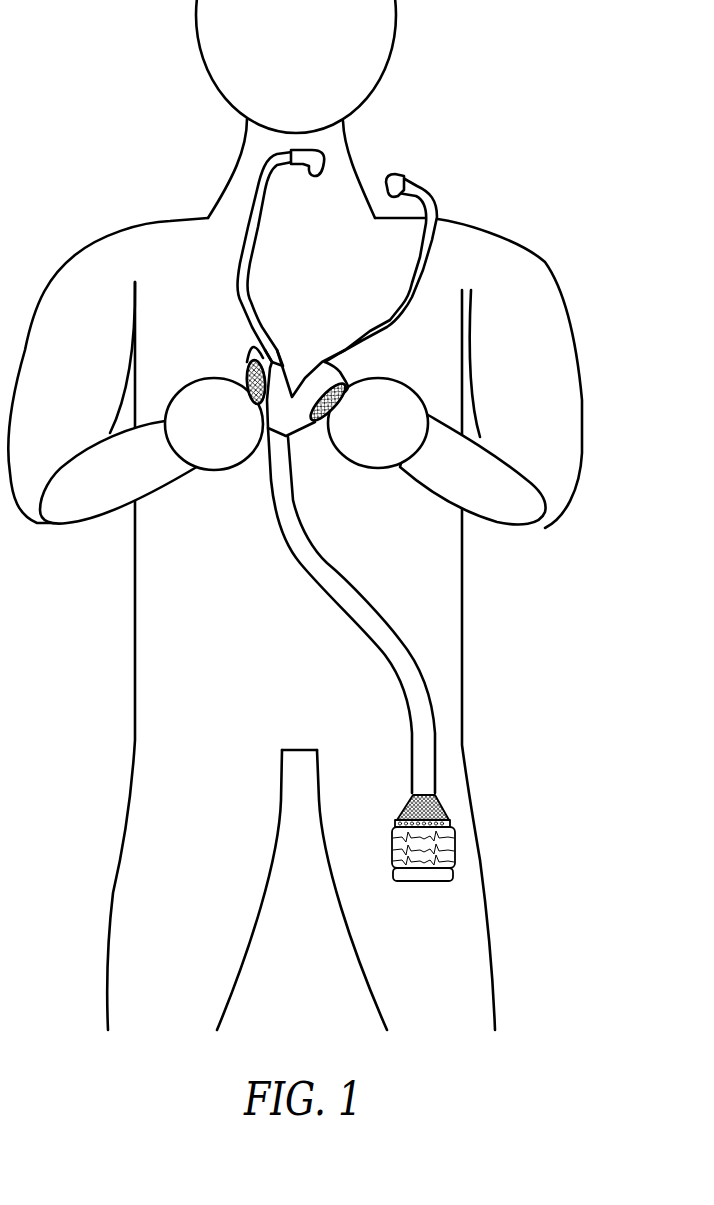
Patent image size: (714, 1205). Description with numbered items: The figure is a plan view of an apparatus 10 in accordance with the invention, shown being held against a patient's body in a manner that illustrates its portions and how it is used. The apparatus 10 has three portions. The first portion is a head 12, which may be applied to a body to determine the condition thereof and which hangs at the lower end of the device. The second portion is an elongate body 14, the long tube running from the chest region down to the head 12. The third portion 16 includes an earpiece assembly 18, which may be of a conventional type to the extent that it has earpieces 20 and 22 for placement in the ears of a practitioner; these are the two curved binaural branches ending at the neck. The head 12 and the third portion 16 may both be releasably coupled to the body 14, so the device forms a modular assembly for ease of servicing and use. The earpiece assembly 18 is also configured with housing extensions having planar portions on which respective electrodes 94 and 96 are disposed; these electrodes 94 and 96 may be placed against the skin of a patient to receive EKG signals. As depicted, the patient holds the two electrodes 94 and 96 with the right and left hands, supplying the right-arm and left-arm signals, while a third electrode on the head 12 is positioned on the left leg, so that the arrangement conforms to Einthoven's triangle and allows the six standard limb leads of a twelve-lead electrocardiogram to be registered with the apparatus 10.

The apparatus 10 is at (335, 515).
The head 12 is at (455, 845).
The elongate body 14 is at (410, 653).
The third portion 16 is at (407, 260).
The earpiece assembly 18 is at (231, 258).
The earpiece 20 is at (303, 167).
The earpiece 22 is at (405, 182).
The electrode 94 is at (247, 368).
The electrode 96 is at (315, 428).